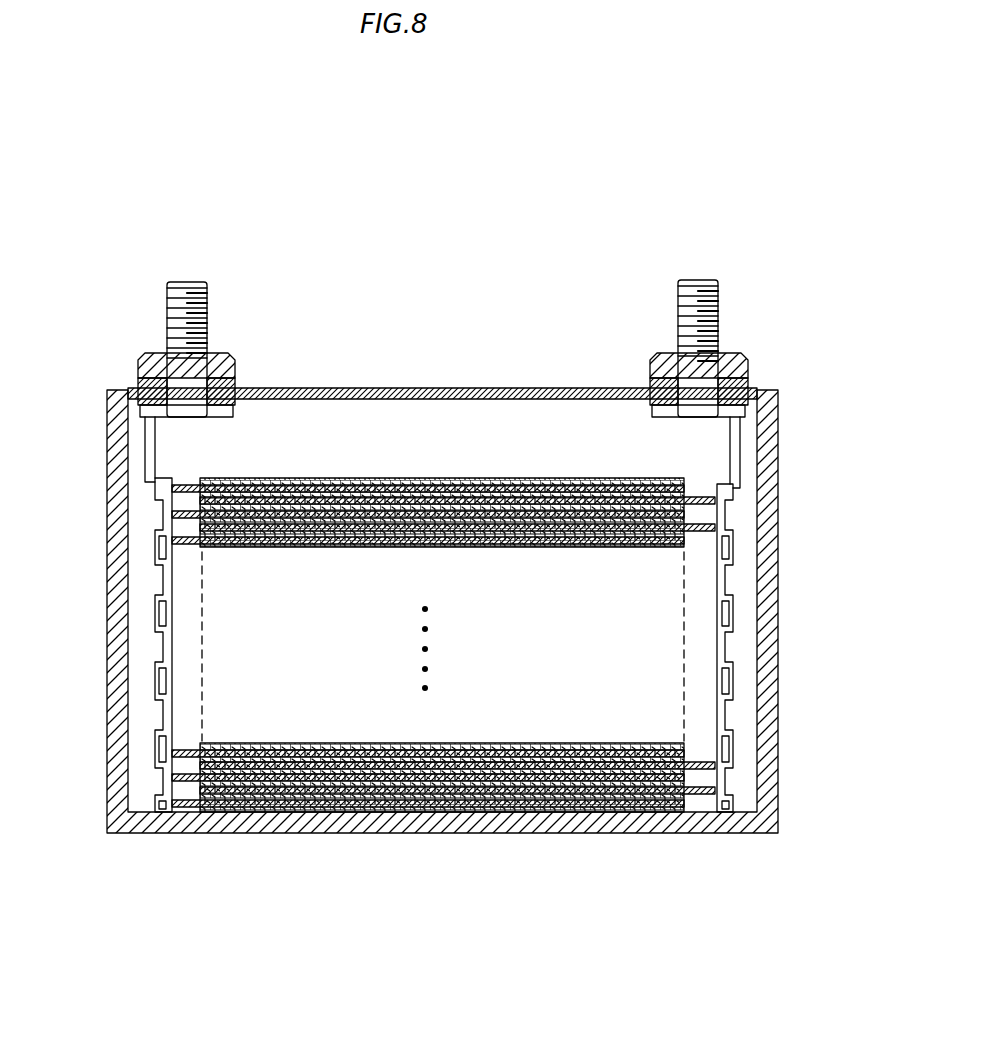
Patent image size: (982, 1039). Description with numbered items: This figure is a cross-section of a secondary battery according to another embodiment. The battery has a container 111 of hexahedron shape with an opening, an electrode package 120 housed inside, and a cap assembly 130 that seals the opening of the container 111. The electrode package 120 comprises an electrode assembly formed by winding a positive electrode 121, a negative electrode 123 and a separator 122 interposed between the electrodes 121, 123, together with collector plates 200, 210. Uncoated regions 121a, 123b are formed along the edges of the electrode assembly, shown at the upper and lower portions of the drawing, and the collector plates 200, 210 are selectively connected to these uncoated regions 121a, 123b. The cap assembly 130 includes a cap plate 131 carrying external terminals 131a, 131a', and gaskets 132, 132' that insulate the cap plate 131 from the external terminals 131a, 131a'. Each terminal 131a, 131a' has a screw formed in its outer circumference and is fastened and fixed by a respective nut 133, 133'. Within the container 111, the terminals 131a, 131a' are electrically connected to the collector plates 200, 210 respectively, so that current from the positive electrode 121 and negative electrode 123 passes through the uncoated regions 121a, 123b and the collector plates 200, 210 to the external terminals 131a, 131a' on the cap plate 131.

The container 111 is at (778, 579).
The cap assembly 130 is at (510, 382).
The cap plate 131 is at (408, 388).
The external terminal 131a is at (173, 327).
The external terminal 131a' is at (691, 327).
The gasket 132 is at (247, 365).
The gasket 132' is at (763, 363).
The nut 133 is at (214, 333).
The nut 133' is at (731, 330).
The collector plate 200 is at (146, 634).
The collector plate 210 is at (744, 628).
The electrode package 120 is at (453, 687).
The positive electrode 121 is at (283, 810).
The uncoated region 121a is at (187, 808).
The separator 122 is at (391, 800).
The negative electrode 123 is at (607, 790).
The uncoated region 123b is at (700, 795).